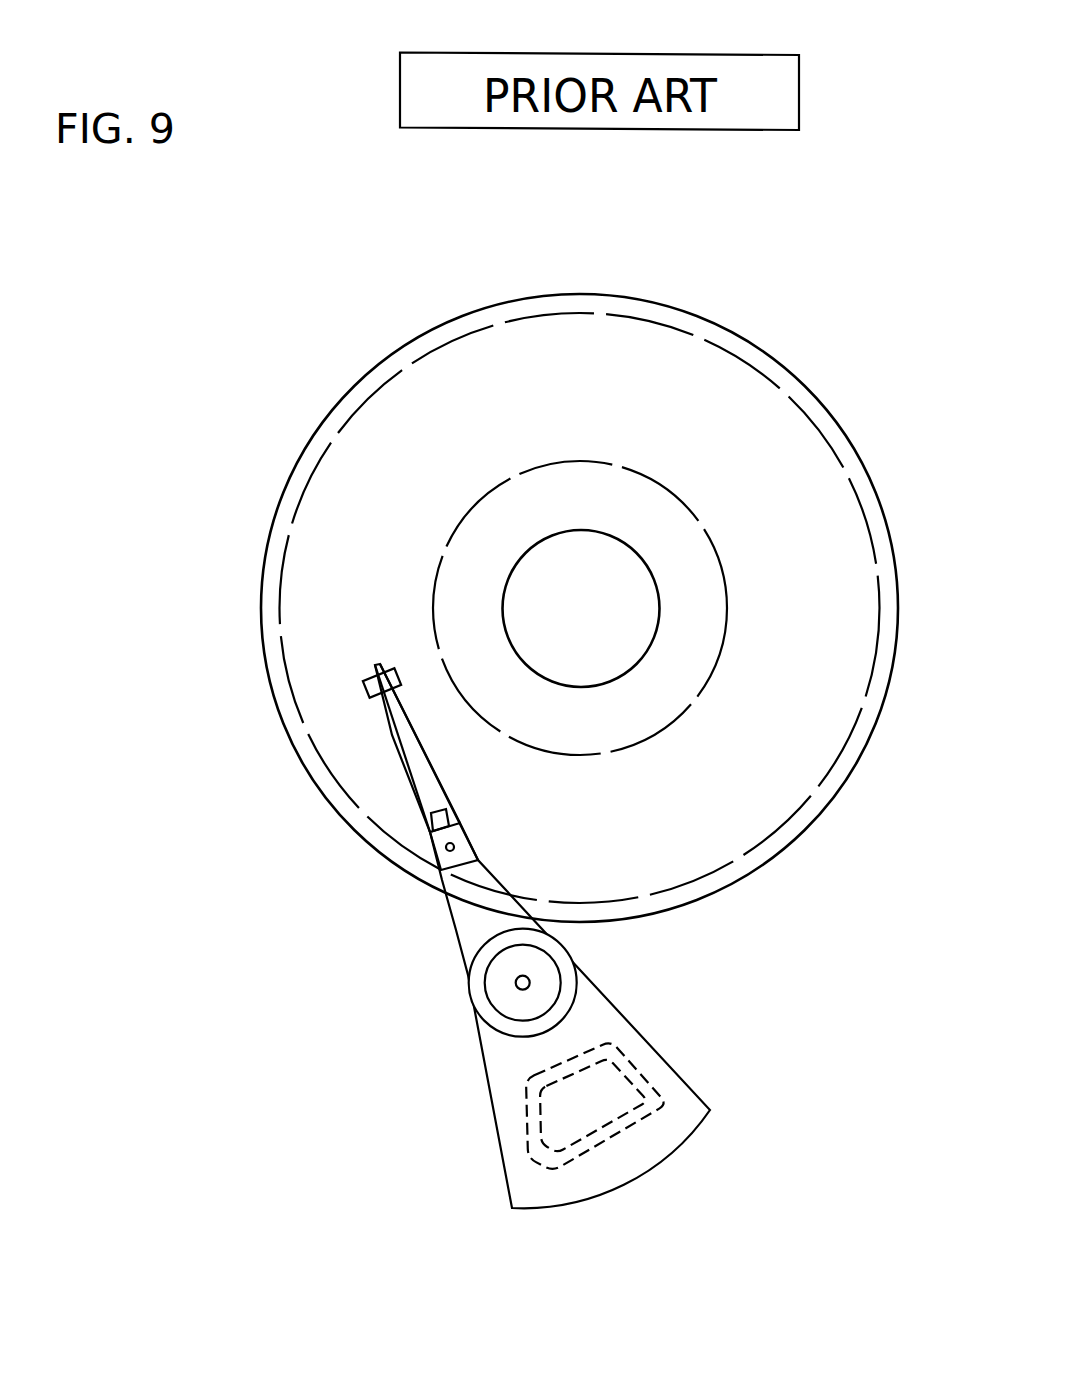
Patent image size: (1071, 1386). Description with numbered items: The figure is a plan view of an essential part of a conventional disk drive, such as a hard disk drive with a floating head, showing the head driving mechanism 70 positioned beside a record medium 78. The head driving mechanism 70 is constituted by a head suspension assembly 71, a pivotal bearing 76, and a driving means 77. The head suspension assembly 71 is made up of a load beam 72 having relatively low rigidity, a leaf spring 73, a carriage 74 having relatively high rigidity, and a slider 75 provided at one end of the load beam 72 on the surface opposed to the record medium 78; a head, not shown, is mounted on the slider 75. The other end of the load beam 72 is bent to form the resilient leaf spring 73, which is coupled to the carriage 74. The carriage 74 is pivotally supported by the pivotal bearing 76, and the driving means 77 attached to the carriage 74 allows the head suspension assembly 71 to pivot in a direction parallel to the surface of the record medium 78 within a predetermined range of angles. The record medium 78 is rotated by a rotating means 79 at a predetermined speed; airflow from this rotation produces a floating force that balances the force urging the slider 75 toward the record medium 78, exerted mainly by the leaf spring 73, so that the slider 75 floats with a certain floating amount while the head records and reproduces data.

The head driving mechanism 70 is at (393, 960).
The head suspension assembly 71 is at (416, 936).
The load beam 72 is at (383, 717).
The leaf spring 73 is at (437, 826).
The carriage 74 is at (455, 928).
The slider 75 is at (299, 710).
The pivotal bearing 76 is at (468, 996).
The driving means 77 is at (448, 1142).
The record medium 78 is at (342, 520).
The rotating means 79 is at (516, 558).